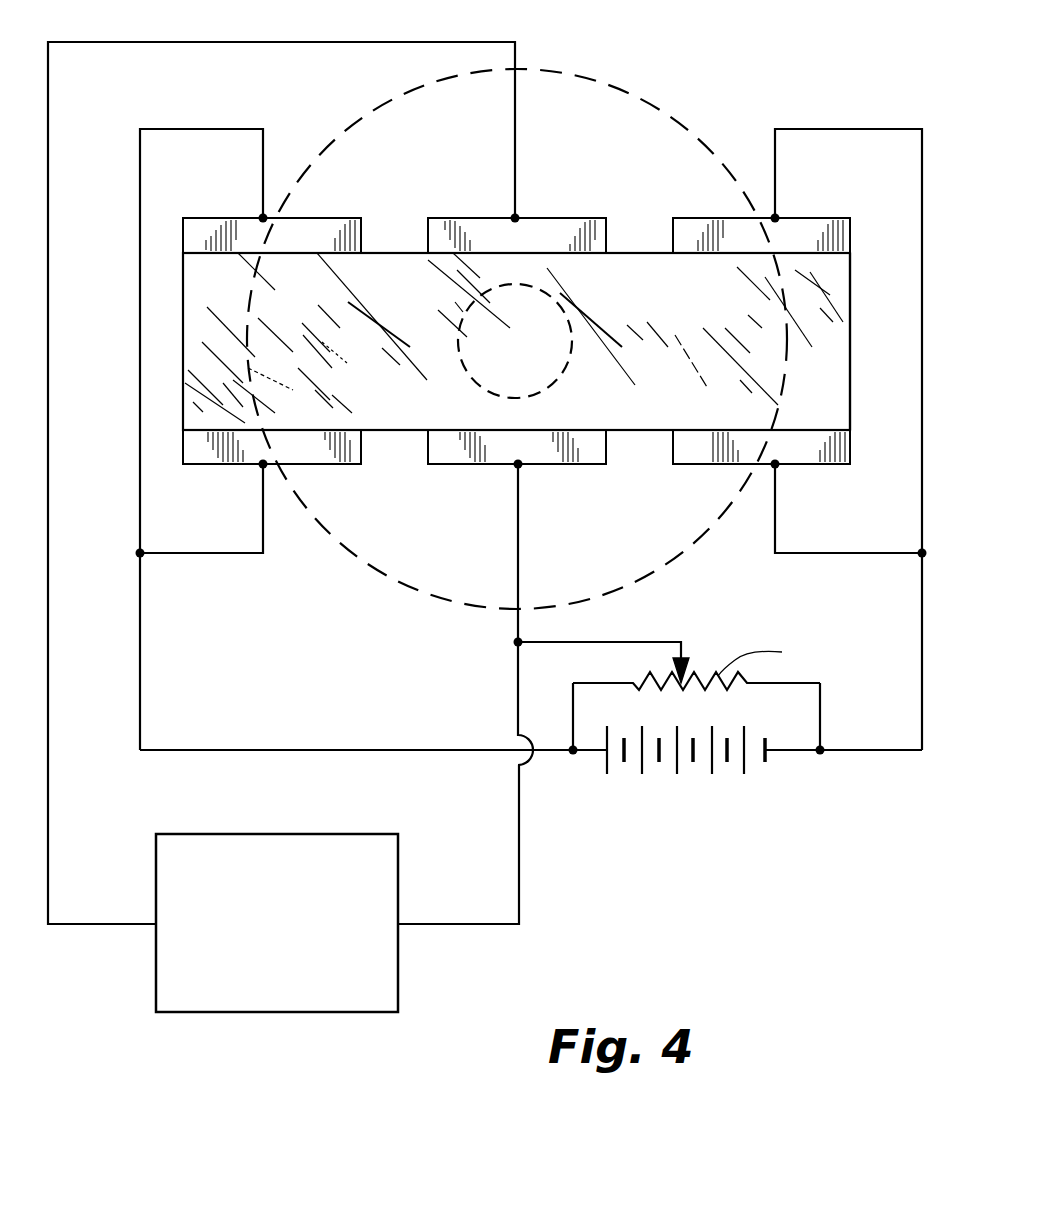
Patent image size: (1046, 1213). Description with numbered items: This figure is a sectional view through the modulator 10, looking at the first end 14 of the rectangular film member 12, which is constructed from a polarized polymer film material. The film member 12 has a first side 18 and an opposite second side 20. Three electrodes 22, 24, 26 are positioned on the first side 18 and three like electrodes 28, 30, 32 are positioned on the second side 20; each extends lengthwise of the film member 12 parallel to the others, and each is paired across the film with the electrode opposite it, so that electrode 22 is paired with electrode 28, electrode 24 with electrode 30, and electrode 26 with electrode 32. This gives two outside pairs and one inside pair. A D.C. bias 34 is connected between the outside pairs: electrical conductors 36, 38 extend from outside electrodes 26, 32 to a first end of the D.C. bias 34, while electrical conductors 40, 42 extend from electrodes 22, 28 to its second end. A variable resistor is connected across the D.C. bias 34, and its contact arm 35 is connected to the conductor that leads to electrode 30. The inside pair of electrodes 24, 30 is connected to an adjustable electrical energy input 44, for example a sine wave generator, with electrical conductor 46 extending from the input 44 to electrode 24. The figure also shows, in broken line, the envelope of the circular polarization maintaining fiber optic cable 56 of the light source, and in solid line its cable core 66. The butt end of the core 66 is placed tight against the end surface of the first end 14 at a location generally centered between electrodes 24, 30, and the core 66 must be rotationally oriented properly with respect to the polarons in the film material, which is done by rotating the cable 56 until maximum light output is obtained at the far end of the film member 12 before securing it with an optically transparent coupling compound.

The modulator 10 is at (397, 430).
The film member 12 is at (855, 296).
The first end 14 is at (832, 370).
The first side 18 is at (398, 252).
The second side 20 is at (636, 432).
The electrode 22 is at (212, 228).
The electrode 24 is at (561, 218).
The electrode 26 is at (824, 218).
The electrode 28 is at (213, 464).
The electrode 30 is at (460, 464).
The electrode 32 is at (707, 460).
The D.C. bias 34 is at (531, 756).
The contact arm 35 is at (612, 642).
The electrical conductor 36 is at (818, 129).
The electrical conductor 38 is at (826, 553).
The electrical conductor 40 is at (236, 129).
The electrical conductor 42 is at (200, 553).
The adjustable electrical energy input 44 is at (232, 1013).
The electrical conductor 46 is at (50, 840).
The fiber optic cable 56 is at (592, 73).
The cable core 66 is at (560, 318).